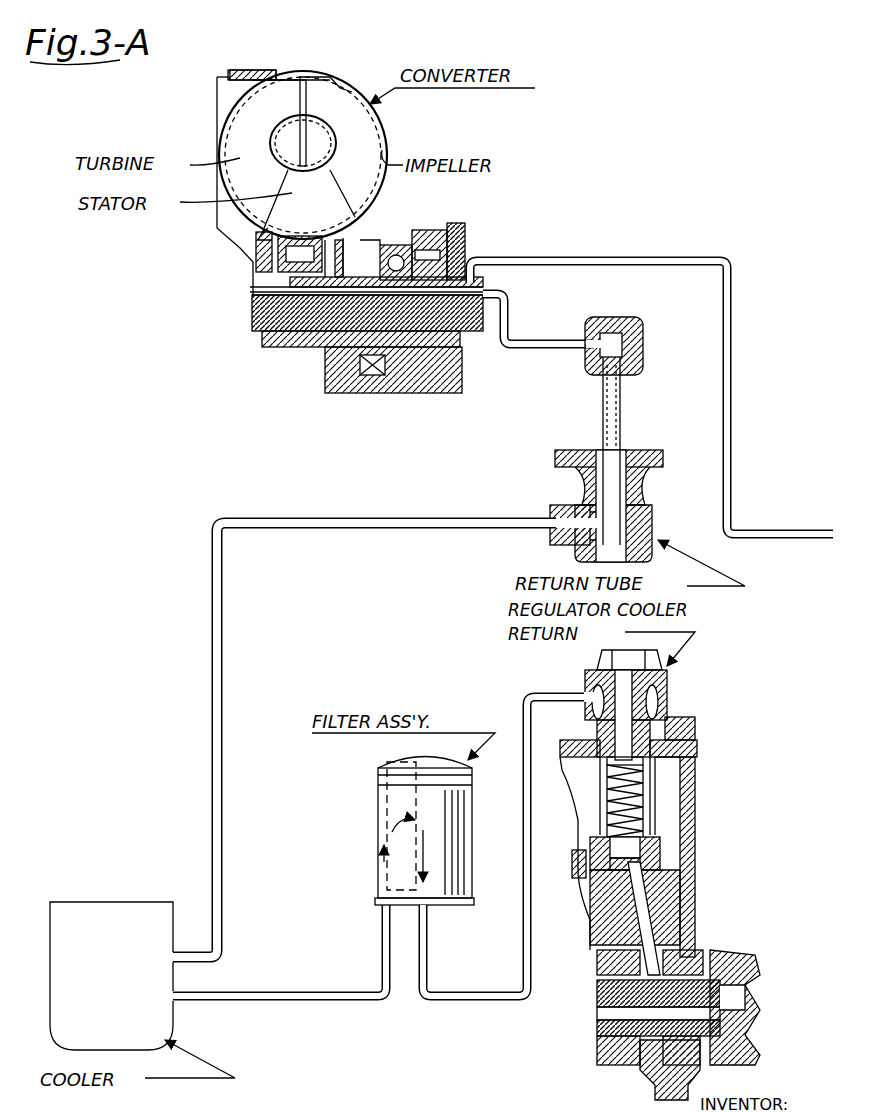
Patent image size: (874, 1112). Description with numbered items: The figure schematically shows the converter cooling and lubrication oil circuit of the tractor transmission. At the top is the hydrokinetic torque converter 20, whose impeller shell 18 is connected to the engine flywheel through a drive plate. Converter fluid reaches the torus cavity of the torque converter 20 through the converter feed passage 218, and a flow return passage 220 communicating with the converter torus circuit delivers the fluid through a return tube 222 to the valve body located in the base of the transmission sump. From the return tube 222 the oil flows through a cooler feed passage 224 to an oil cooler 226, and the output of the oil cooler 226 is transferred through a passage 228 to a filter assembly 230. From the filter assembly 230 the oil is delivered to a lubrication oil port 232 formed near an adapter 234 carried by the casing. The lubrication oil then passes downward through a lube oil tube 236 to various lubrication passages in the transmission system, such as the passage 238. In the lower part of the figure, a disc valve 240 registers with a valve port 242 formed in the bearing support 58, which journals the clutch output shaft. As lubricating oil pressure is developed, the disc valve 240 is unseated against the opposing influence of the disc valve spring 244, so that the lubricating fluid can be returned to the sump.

The impeller shell 18 is at (322, 72).
The hydrokinetic torque converter 20 is at (352, 80).
The bearing support 58 is at (600, 880).
The converter feed passage 218 is at (722, 505).
The flow return passage 220 is at (512, 344).
The return tube 222 is at (603, 410).
The cooler feed passage 224 is at (212, 695).
The oil cooler 226 is at (73, 907).
The passage 228 is at (382, 927).
The filter assembly 230 is at (378, 795).
The lubrication oil port 232 is at (590, 695).
The adapter 234 is at (668, 680).
The lube oil tube 236 is at (640, 805).
The lubrication passage 238 is at (645, 922).
The disc valve 240 is at (640, 830).
The valve port 242 is at (650, 856).
The disc valve spring 244 is at (640, 785).